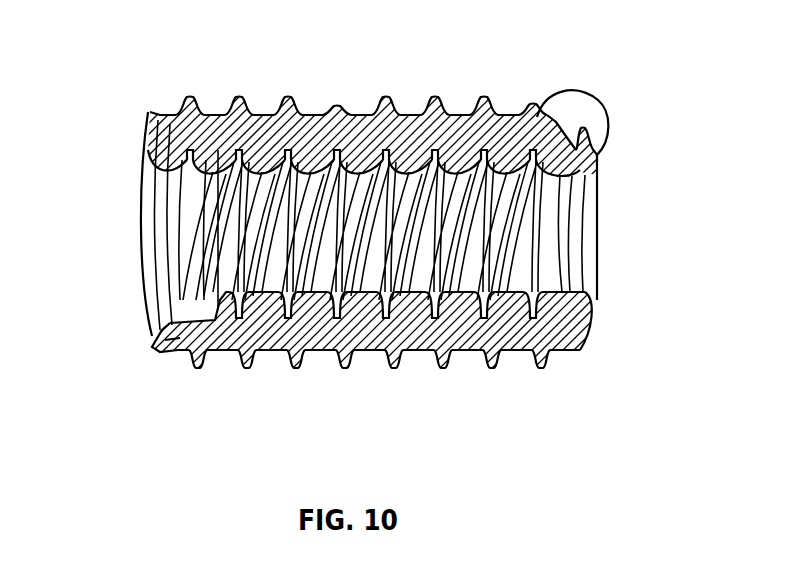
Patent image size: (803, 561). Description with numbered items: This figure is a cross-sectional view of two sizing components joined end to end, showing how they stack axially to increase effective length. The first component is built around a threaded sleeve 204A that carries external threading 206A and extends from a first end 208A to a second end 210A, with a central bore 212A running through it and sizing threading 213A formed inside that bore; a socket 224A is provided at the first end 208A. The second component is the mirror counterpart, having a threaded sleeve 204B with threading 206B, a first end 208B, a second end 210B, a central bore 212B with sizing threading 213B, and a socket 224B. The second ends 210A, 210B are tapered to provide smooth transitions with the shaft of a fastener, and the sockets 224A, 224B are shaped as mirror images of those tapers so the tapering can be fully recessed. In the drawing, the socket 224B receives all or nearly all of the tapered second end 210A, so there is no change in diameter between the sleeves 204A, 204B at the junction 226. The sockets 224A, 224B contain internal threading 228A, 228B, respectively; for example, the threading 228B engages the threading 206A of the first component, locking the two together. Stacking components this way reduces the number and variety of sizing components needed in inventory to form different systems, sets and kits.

The threaded sleeve 204A is at (270, 127).
The threaded sleeve 204B is at (455, 114).
The threading 206A is at (295, 102).
The threading 206B is at (544, 98).
The first end 208A is at (152, 125).
The first end 208B is at (330, 113).
The second end 210A is at (422, 113).
The second end 210B is at (598, 153).
The central bore 212A is at (276, 305).
The central bore 212B is at (470, 288).
The sizing threading 213A is at (242, 156).
The sizing threading 213B is at (588, 180).
The socket 224A is at (157, 350).
The socket 224B is at (384, 335).
The junction 226 is at (340, 364).
The threading 228A is at (187, 356).
The threading 228B is at (391, 312).